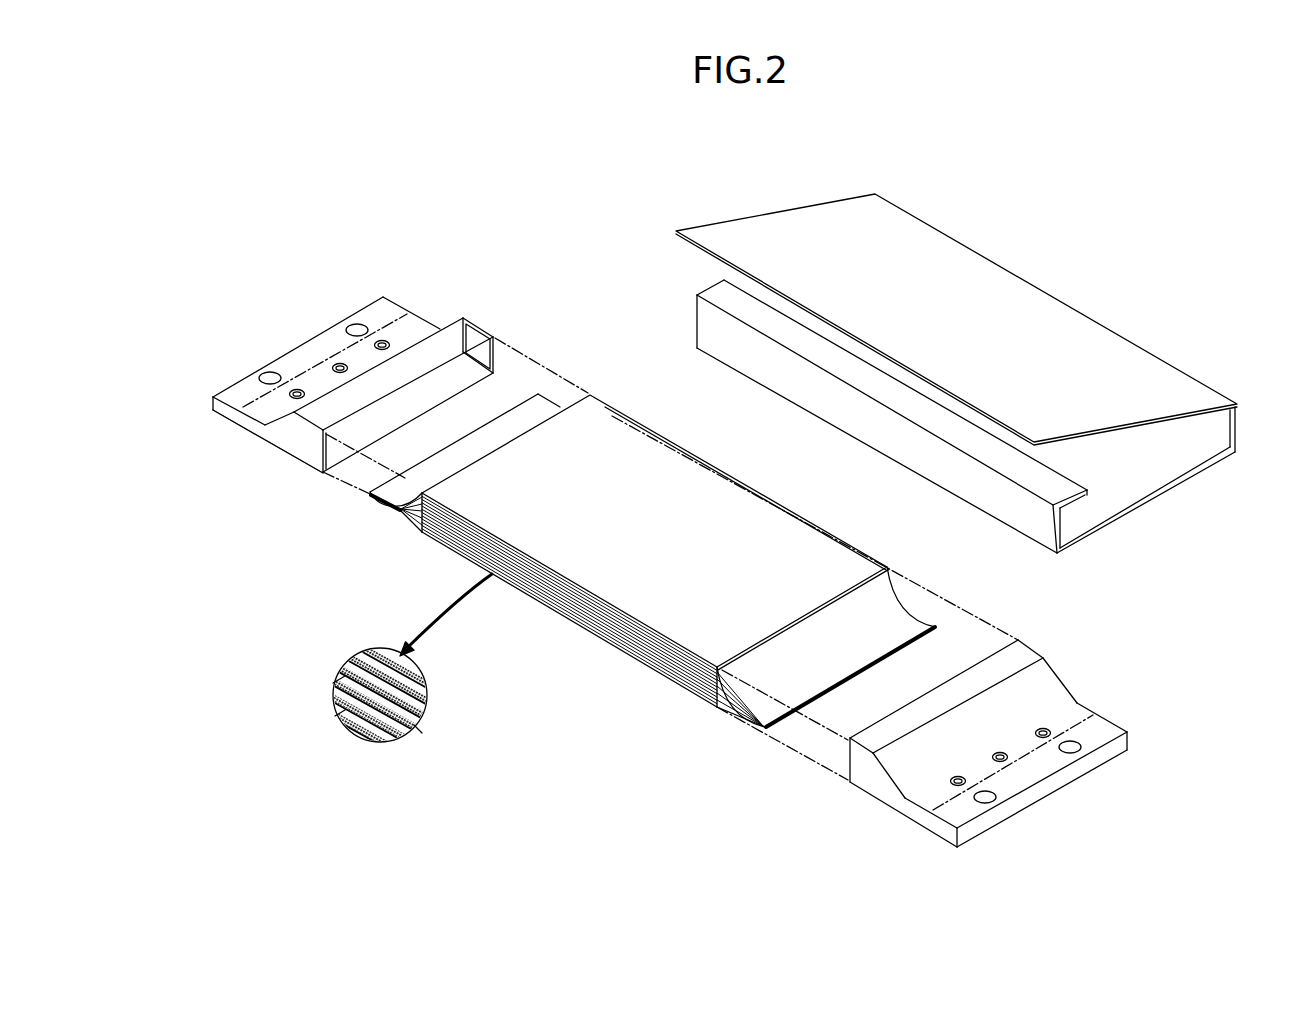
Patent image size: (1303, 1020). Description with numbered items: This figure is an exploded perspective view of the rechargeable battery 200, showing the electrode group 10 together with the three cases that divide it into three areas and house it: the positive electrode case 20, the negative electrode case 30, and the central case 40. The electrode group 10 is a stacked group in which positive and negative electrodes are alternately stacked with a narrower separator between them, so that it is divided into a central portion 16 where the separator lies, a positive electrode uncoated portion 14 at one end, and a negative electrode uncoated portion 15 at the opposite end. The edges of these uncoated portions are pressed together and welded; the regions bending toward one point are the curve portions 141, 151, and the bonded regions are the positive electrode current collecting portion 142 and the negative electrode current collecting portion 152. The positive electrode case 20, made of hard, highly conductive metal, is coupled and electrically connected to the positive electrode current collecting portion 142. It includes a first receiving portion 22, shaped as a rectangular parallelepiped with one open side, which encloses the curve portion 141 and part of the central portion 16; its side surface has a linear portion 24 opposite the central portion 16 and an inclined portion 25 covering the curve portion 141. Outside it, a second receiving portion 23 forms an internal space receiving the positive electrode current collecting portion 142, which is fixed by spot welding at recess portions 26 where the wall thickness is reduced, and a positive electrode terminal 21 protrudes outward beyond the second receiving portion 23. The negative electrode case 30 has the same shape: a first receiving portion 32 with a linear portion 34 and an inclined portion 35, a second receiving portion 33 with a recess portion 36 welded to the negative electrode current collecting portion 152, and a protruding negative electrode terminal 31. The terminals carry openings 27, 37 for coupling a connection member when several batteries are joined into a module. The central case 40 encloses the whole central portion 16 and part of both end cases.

The rechargeable battery 200 is at (665, 140).
The electrode group 10 is at (628, 690).
The positive electrode uncoated portion 14 is at (382, 587).
The curve portion 141 is at (417, 521).
The positive electrode current collecting portion 142 is at (377, 504).
The negative electrode uncoated portion 15 is at (706, 786).
The curve portion 151 is at (717, 709).
The negative electrode current collecting portion 152 is at (760, 729).
The central portion 16 is at (607, 418).
The positive electrode case 20 is at (262, 346).
The positive electrode terminal 21 is at (241, 385).
The first receiving portion 22 is at (289, 534).
The second receiving portion 23 is at (265, 414).
The linear portion 24 is at (322, 418).
The inclined portion 25 is at (290, 418).
The recess portion 26 is at (337, 366).
The opening 27 is at (355, 325).
The negative electrode case 30 is at (1118, 718).
The negative electrode terminal 31 is at (1017, 787).
The first receiving portion 32 is at (831, 860).
The second receiving portion 33 is at (922, 805).
The linear portion 34 is at (872, 775).
The inclined portion 35 is at (903, 781).
The recess portion 36 is at (1043, 728).
The opening 37 is at (1079, 751).
The central case 40 is at (1110, 314).